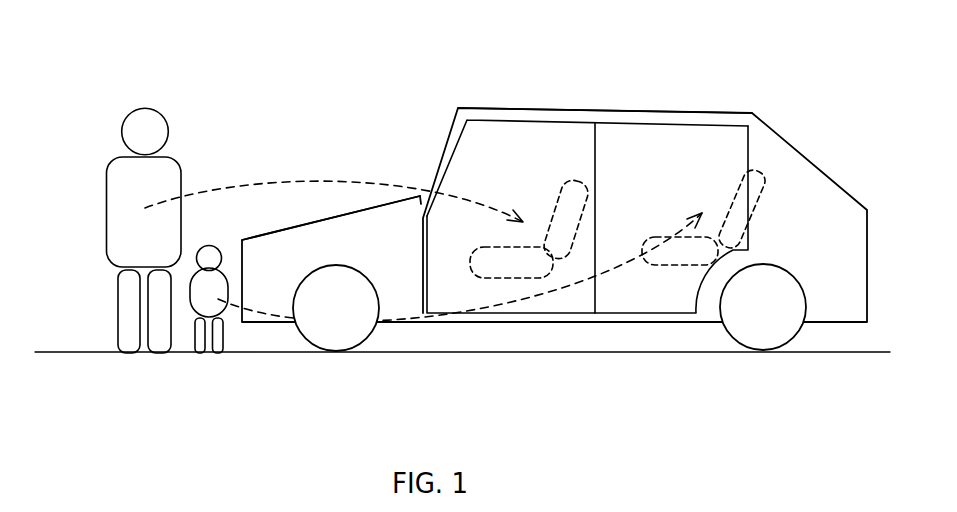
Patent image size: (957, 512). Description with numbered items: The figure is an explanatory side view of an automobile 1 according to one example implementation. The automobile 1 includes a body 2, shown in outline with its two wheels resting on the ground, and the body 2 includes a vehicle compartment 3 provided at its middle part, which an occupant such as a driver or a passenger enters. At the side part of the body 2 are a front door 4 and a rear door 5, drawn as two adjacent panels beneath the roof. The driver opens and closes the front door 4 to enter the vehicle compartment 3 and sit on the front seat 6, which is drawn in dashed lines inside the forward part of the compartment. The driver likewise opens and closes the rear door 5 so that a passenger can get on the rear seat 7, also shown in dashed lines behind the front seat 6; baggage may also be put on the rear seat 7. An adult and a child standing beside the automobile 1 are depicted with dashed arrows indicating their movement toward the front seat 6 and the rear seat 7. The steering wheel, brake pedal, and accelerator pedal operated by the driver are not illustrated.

The automobile 1 is at (563, 80).
The body 2 is at (348, 230).
The vehicle compartment 3 is at (482, 145).
The front door 4 is at (455, 287).
The rear door 5 is at (627, 287).
The front seat 6 is at (505, 267).
The rear seat 7 is at (678, 265).